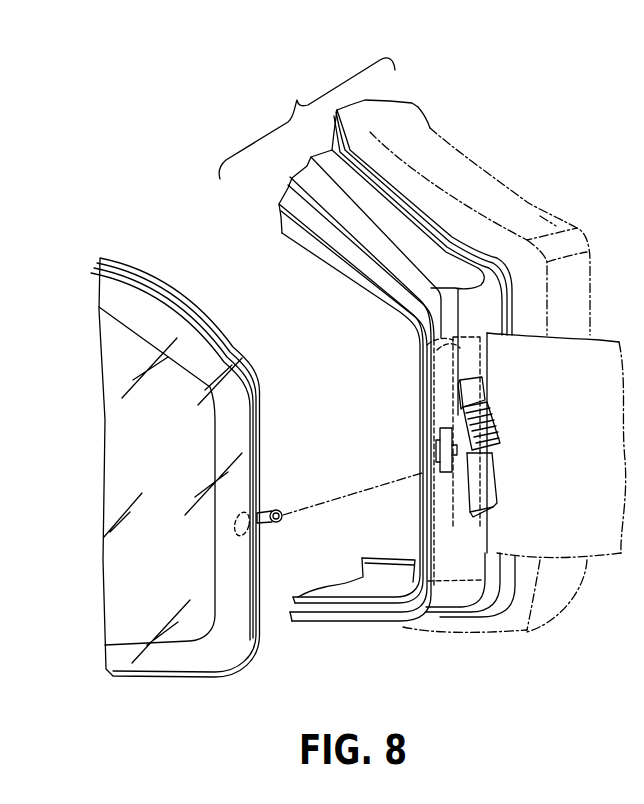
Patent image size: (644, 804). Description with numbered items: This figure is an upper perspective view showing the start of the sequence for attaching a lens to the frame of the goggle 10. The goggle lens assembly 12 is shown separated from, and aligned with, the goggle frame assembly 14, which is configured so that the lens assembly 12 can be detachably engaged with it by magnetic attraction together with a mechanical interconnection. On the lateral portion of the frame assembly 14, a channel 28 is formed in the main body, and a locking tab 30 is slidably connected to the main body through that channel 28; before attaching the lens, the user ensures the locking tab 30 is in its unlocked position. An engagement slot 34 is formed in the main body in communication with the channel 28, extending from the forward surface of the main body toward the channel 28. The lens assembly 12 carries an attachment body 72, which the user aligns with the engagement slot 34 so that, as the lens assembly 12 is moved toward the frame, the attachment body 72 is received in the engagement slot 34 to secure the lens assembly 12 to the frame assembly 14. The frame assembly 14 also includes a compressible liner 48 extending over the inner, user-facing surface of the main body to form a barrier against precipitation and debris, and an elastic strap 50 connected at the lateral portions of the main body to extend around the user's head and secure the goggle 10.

The goggle 10 is at (575, 123).
The goggle lens assembly 12 is at (147, 252).
The goggle frame assembly 14 is at (307, 118).
The channel 28 is at (452, 510).
The locking tab 30 is at (505, 463).
The engagement slot 34 is at (422, 472).
The compressible liner 48 is at (542, 218).
The elastic strap 50 is at (608, 562).
The attachment body 72 is at (270, 502).